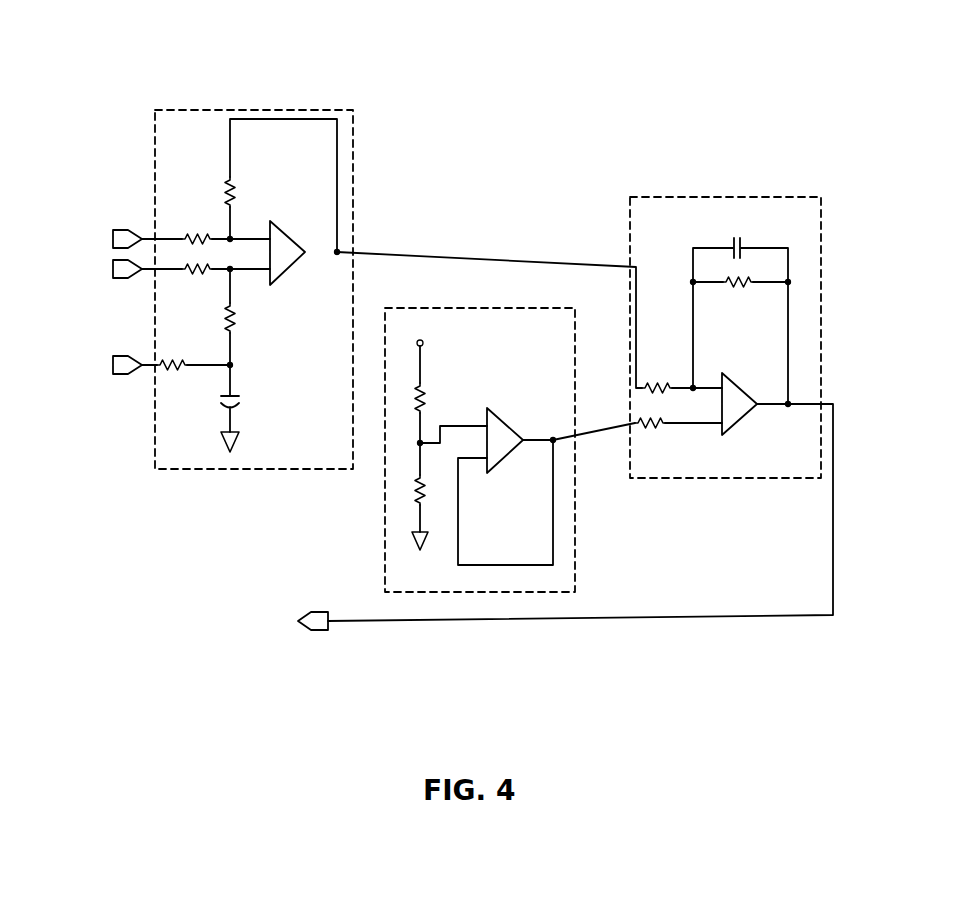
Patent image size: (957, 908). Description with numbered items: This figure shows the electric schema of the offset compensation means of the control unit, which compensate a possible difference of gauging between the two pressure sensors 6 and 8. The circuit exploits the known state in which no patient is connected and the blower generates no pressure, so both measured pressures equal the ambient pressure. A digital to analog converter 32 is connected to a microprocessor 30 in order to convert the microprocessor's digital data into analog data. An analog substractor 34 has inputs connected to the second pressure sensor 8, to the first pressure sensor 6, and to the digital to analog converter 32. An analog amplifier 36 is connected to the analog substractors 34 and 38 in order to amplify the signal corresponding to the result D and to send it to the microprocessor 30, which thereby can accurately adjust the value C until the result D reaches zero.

The pressure sensor 6 is at (115, 231).
The pressure sensor 8 is at (115, 262).
The microprocessor 30 is at (308, 612).
The digital to analog converter 32 is at (118, 357).
The analog substractor 34 is at (187, 117).
The analog amplifier 36 is at (770, 210).
The analog substractor 38 is at (555, 585).